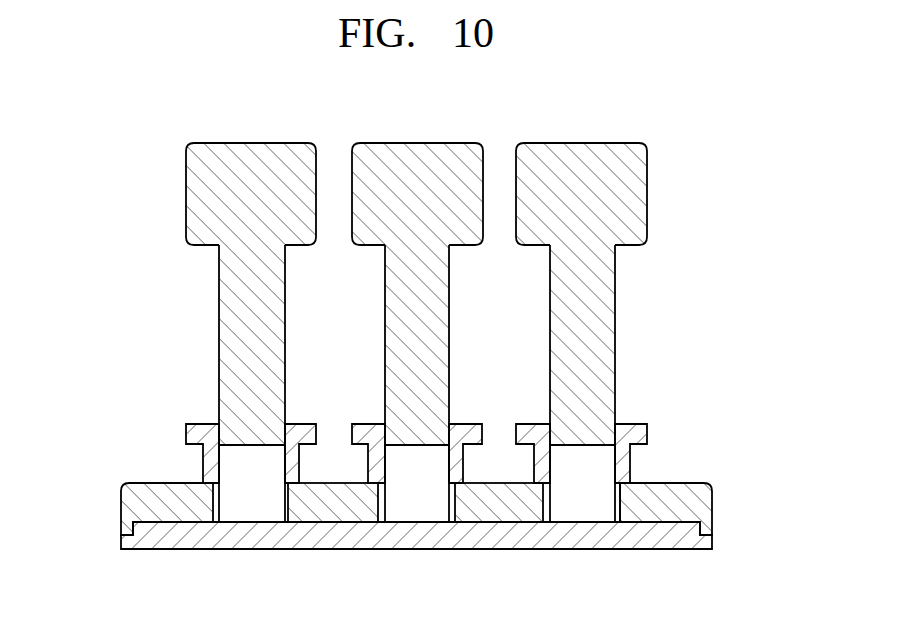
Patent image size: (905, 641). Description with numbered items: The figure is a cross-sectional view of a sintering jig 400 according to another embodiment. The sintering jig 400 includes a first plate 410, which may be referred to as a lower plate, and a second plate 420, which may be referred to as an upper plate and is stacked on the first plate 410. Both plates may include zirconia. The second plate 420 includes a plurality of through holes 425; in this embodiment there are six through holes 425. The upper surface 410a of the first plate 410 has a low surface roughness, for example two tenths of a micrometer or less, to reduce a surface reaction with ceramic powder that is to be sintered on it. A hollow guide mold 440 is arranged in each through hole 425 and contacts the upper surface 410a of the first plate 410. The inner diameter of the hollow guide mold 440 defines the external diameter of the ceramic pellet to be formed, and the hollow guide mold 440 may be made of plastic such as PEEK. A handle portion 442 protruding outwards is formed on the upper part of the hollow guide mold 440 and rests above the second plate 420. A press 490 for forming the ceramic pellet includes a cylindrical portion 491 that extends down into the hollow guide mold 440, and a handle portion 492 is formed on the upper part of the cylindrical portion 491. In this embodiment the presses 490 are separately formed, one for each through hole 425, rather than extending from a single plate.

The sintering jig 400 is at (133, 424).
The first plate 410 is at (705, 543).
The upper surface of the first plate 410a is at (415, 523).
The second plate 420 is at (705, 507).
The through hole 425 is at (620, 508).
The hollow guide mold 440 is at (507, 452).
The handle portion of the hollow guide mold 442 is at (646, 435).
The press 490 is at (733, 187).
The cylindrical portion 491 is at (612, 325).
The handle portion of the press 492 is at (647, 199).